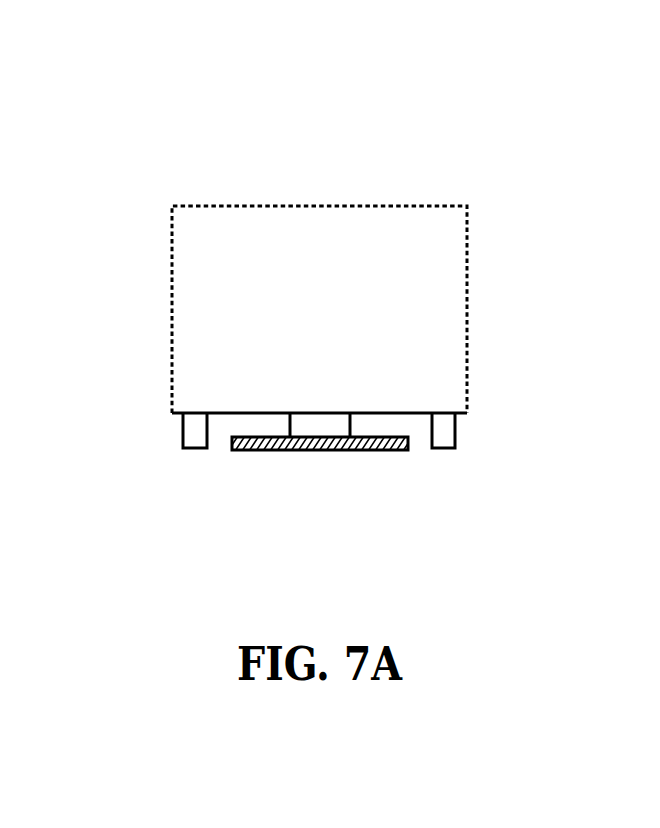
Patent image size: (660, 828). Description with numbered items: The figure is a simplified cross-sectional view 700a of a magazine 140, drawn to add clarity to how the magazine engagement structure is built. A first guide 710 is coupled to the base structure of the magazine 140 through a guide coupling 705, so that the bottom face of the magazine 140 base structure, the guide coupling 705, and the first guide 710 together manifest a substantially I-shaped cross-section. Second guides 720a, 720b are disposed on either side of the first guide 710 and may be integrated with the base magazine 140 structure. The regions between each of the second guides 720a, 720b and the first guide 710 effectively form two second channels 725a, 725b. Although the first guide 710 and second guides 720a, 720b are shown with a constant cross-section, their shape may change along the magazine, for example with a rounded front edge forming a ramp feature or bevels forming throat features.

The simplified cross-sectional view 700a is at (409, 103).
The magazine 140 is at (467, 262).
The guide coupling 705 is at (320, 422).
The first guide 710 is at (325, 450).
The second guide 720a is at (102, 452).
The second guide 720b is at (537, 453).
The second channel 725a is at (223, 430).
The second channel 725b is at (420, 430).